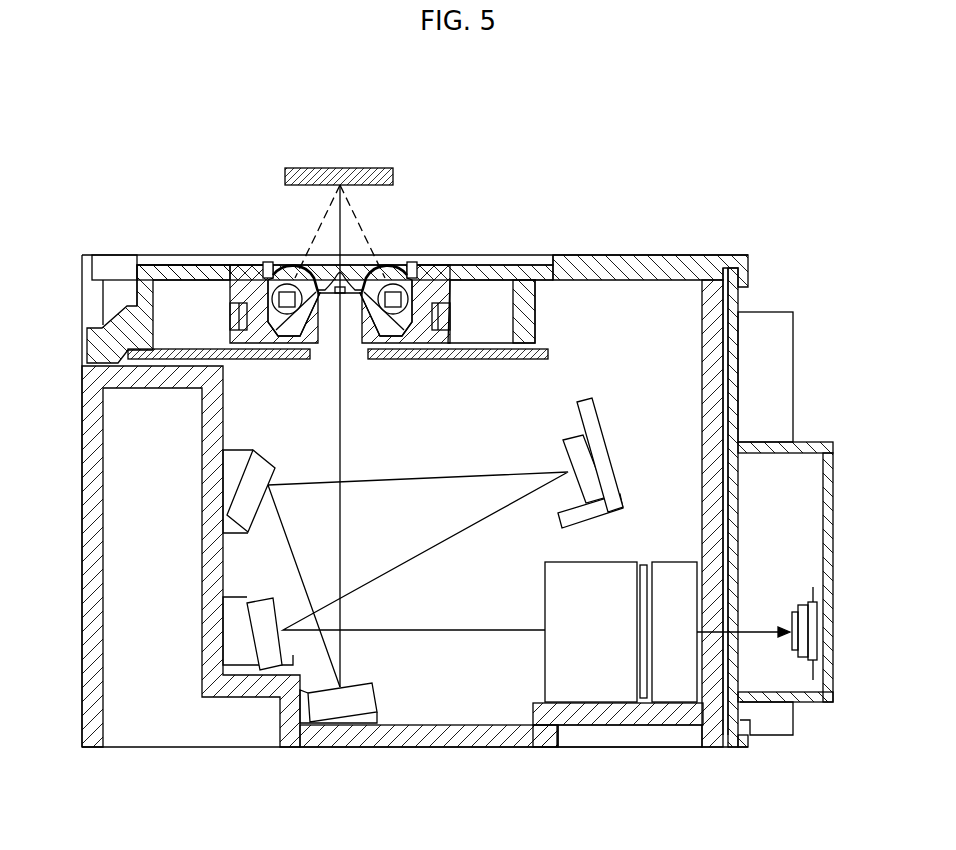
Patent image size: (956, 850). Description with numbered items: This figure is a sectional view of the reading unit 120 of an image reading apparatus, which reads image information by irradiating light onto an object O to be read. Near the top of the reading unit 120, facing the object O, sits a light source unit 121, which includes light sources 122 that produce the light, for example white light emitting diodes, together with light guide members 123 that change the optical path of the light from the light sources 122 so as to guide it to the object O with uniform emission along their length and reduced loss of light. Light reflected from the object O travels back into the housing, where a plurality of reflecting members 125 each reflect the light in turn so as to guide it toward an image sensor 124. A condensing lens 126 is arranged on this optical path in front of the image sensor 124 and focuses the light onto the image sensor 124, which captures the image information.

The reading unit 120 is at (698, 194).
The light source unit 121 is at (262, 196).
The light sources 122 is at (267, 261).
The light guide members 123 is at (290, 268).
The image sensor 124 is at (802, 658).
The reflecting members 125 is at (270, 458).
The condensing lens 126 is at (593, 688).
The object to be read O is at (360, 166).